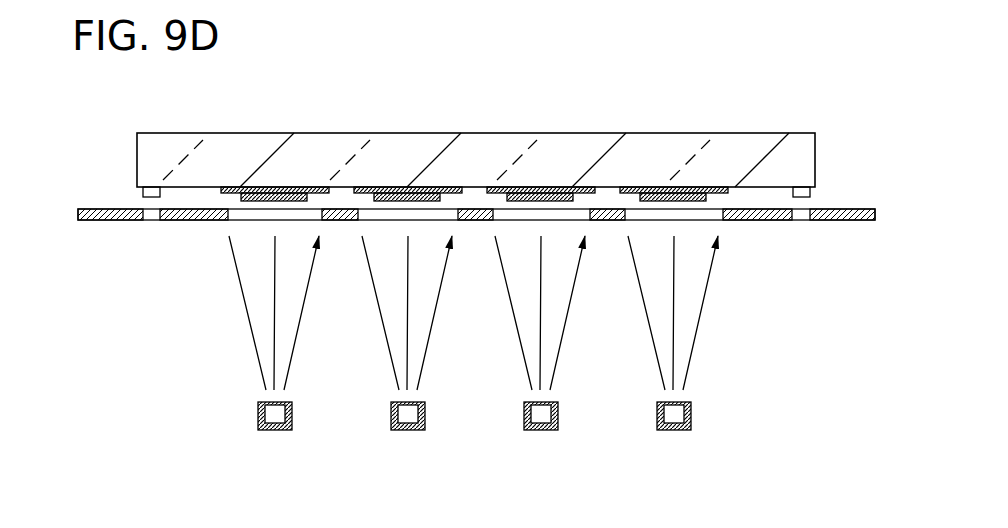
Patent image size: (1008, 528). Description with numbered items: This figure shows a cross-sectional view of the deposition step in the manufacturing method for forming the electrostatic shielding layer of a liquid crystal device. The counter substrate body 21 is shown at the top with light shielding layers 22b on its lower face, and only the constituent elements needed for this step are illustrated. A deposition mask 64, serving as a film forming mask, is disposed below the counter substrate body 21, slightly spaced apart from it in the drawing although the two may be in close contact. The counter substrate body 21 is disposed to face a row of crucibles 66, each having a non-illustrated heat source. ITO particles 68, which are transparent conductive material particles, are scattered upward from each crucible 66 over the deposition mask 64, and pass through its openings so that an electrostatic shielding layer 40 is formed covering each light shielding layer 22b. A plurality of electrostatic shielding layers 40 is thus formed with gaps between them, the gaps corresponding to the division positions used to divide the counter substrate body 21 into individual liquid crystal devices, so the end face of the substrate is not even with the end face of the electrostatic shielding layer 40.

The counter substrate body 21 is at (807, 160).
The light shielding layer 22b is at (657, 187).
The electrostatic shielding layer 40 is at (715, 187).
The deposition mask 64 is at (842, 221).
The crucible 66 is at (691, 410).
The ITO particles 68 is at (697, 336).